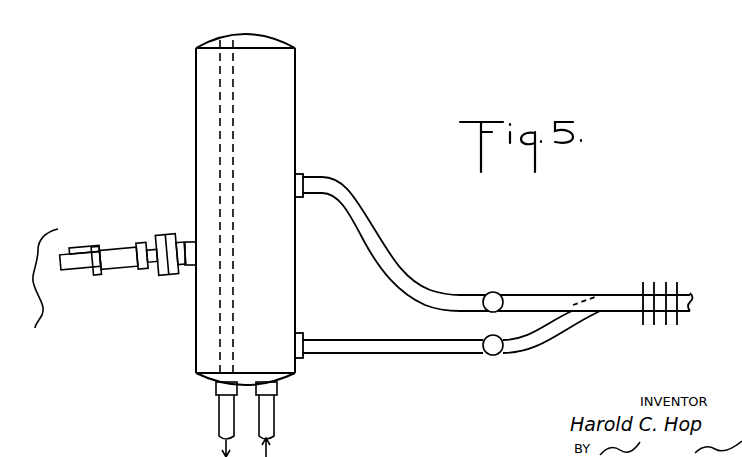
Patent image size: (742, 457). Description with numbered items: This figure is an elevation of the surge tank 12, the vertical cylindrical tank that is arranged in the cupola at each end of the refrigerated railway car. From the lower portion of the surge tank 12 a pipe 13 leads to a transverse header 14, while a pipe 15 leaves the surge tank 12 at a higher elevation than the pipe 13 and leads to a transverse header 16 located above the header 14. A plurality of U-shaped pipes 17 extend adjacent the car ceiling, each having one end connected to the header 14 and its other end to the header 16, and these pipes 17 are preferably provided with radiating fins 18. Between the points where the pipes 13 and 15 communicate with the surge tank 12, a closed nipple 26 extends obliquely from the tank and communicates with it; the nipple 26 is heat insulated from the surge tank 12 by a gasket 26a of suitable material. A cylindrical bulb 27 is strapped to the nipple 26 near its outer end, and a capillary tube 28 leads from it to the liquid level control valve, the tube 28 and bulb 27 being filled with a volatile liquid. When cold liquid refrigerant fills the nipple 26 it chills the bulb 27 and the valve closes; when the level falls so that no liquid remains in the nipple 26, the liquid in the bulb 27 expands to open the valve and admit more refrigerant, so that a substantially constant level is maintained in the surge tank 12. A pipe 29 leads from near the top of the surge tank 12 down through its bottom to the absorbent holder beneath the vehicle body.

The surge tank 12 is at (296, 128).
The pipe 13 is at (353, 348).
The transverse header 14 is at (493, 356).
The pipe 15 is at (373, 249).
The transverse header 16 is at (494, 293).
The U-shaped pipe 17 is at (636, 313).
The radiating fins 18 is at (665, 285).
The closed nipple 26 is at (113, 252).
The gasket 26a is at (170, 232).
The cylindrical bulb 27 is at (85, 230).
The capillary tube 28 is at (40, 275).
The pipe 29 is at (220, 97).